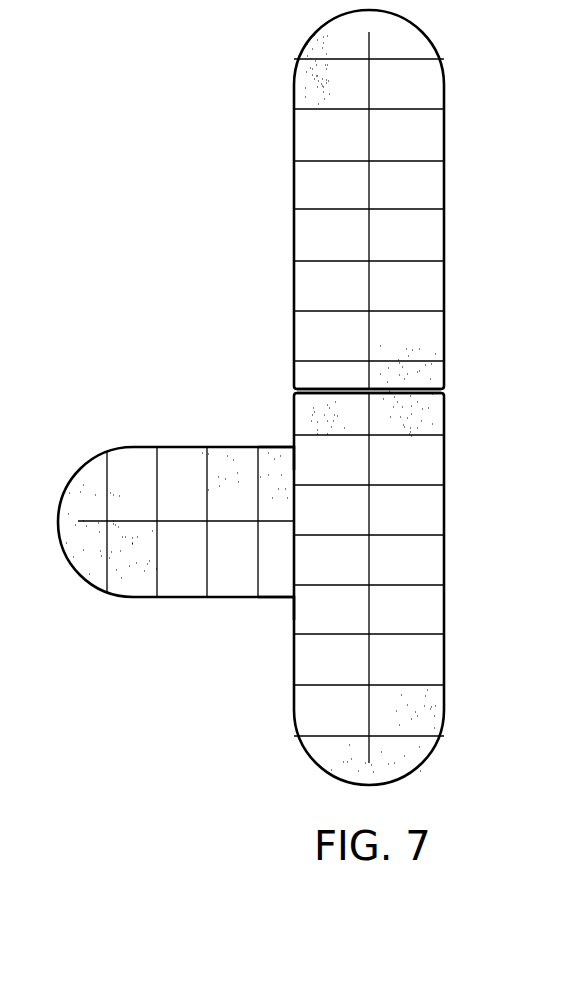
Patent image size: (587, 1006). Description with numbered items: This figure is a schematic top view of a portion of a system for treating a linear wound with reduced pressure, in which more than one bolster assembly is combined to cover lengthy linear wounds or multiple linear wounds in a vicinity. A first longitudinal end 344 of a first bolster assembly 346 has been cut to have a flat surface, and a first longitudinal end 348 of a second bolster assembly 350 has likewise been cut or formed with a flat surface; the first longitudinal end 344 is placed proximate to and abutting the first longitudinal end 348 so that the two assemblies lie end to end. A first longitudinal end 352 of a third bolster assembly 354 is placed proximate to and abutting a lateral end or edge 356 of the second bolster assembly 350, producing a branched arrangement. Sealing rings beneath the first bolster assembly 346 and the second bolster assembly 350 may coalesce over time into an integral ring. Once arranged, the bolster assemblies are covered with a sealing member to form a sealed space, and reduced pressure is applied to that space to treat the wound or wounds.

The first longitudinal end 344 is at (445, 381).
The first bolster assembly 346 is at (445, 137).
The first longitudinal end 348 is at (445, 400).
The second bolster assembly 350 is at (445, 560).
The first longitudinal end 352 is at (286, 445).
The third bolster assembly 354 is at (138, 445).
The lateral end or edge 356 is at (293, 612).